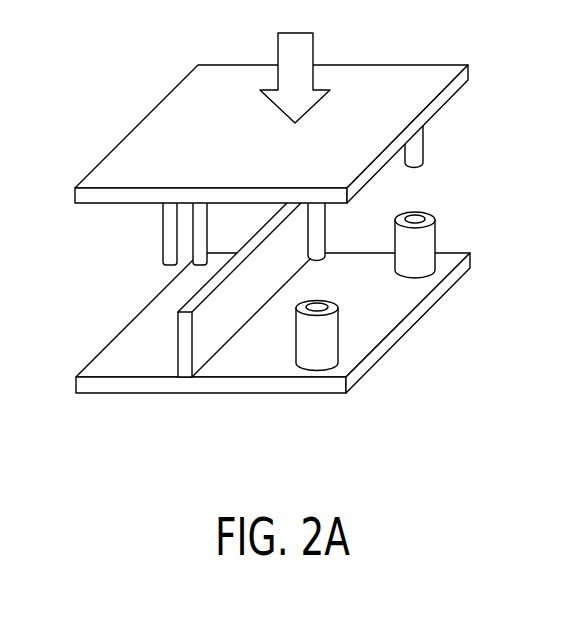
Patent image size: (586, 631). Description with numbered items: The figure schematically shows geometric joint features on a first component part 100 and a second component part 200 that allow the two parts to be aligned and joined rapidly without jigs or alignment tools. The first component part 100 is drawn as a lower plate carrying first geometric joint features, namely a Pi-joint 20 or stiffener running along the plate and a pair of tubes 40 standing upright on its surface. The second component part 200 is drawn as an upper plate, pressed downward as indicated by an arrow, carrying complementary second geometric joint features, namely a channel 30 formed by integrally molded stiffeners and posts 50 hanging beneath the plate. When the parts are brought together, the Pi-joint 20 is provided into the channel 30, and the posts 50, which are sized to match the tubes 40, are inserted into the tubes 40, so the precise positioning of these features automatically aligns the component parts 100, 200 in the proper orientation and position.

The first component part 100 is at (123, 358).
The second component part 200 is at (143, 125).
The Pi-joint 20 is at (186, 365).
The channel 30 is at (167, 256).
The tube 40 is at (422, 242).
The post 50 is at (318, 240).